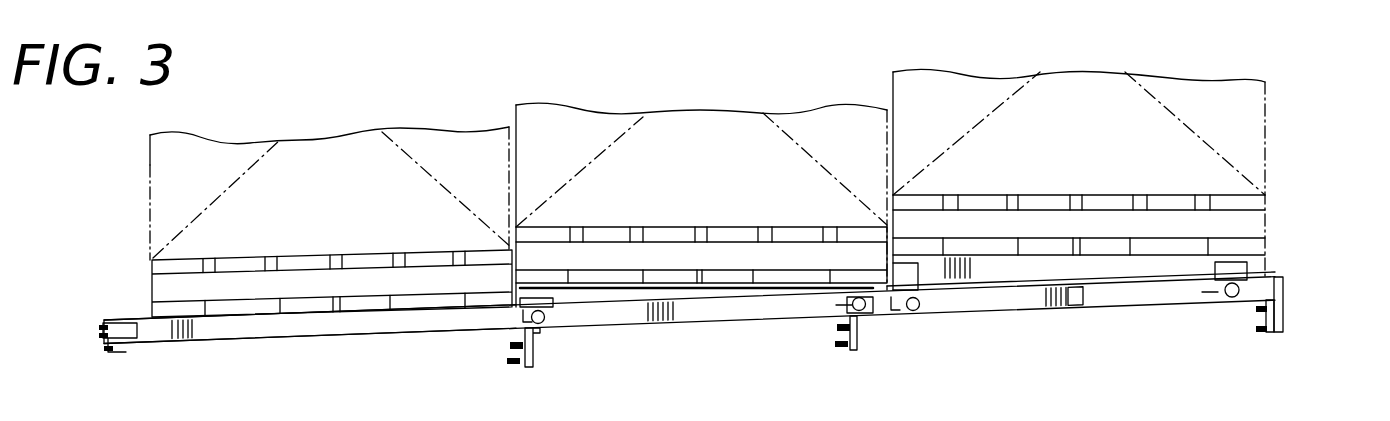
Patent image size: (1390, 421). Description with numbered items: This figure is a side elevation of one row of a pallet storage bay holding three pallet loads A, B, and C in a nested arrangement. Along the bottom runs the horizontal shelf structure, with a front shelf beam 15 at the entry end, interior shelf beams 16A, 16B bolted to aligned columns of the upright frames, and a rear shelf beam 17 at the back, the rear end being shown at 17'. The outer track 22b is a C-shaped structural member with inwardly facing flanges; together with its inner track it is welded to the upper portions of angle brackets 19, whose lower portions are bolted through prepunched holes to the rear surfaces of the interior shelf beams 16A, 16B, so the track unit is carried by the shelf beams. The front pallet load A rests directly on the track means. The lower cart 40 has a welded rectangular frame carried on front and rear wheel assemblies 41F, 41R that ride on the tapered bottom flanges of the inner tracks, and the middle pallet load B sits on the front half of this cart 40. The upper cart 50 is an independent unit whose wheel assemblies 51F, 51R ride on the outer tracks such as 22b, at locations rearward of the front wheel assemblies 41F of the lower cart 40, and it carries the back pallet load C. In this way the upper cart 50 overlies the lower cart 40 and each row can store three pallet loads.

The pallet load A is at (296, 172).
The pallet load B is at (653, 141).
The pallet load C is at (1049, 100).
The front shelf beam 15 is at (110, 352).
The interior shelf beam 16A is at (513, 363).
The interior shelf beam 16B is at (858, 352).
The rear shelf beam 17 is at (1296, 345).
The rear end plate 17' is at (1325, 294).
The angle bracket 19 is at (540, 332).
The outer track 22b is at (340, 328).
The lower cart 40 is at (634, 304).
The front wheel assembly 41F is at (553, 306).
The rear wheel assembly 41R is at (828, 306).
The upper cart 50 is at (1080, 268).
The front wheel assembly 51F is at (935, 280).
The rear wheel assembly 51R is at (1192, 280).